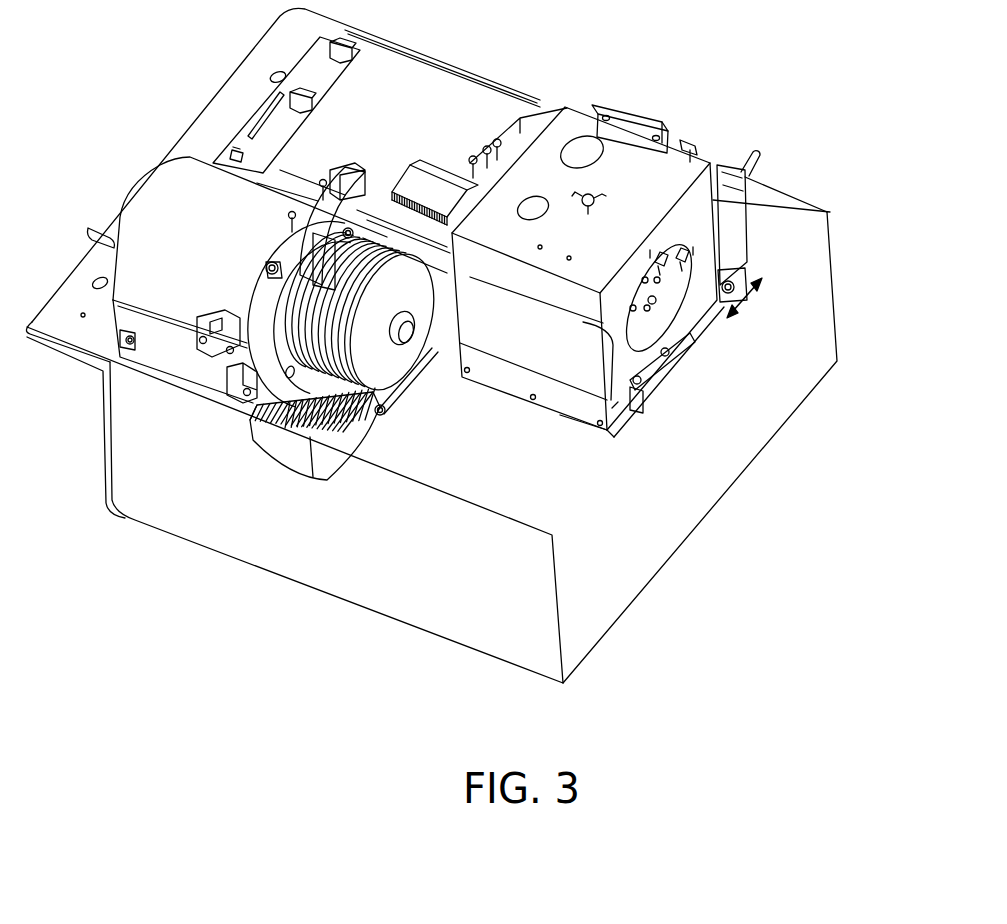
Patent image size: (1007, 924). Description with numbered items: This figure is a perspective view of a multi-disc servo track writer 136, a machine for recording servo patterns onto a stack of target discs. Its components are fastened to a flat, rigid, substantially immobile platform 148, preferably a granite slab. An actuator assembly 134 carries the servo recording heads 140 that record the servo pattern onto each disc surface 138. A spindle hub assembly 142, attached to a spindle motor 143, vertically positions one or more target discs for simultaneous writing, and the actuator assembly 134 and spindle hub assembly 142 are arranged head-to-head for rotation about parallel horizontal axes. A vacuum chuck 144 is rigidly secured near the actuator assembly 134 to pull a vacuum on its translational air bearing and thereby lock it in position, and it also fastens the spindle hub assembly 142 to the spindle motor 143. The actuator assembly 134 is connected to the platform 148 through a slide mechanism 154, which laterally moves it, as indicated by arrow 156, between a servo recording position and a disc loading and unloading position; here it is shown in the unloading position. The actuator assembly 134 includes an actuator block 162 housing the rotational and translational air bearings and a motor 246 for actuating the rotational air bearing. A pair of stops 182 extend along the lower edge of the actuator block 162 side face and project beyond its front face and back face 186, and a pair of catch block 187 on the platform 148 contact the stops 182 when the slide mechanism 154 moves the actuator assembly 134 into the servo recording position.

The actuator assembly 134 is at (588, 431).
The multi-disc servo track writer 136 is at (664, 92).
The disc surface 138 is at (381, 320).
The servo recording heads 140 is at (393, 200).
The spindle hub assembly 142 is at (410, 342).
The spindle motor 143 is at (157, 188).
The vacuum chuck 144 is at (373, 97).
The platform 148 is at (482, 492).
The slide mechanism 154 is at (733, 203).
The arrow 156 is at (740, 290).
The actuator block 162 is at (687, 145).
The stops 182 is at (740, 245).
The back face 186 is at (613, 407).
The catch block 187 is at (652, 395).
The motor 246 is at (652, 300).